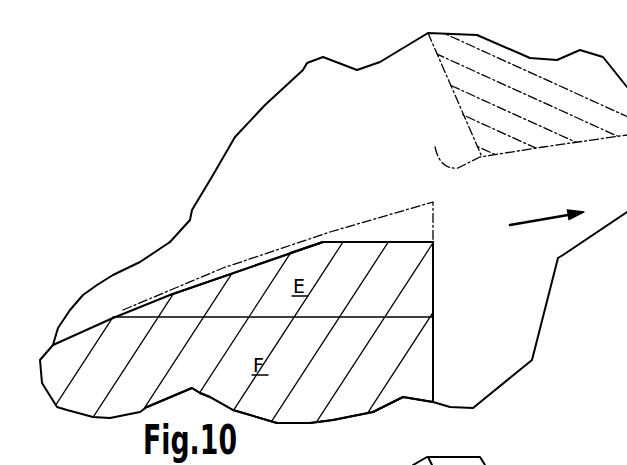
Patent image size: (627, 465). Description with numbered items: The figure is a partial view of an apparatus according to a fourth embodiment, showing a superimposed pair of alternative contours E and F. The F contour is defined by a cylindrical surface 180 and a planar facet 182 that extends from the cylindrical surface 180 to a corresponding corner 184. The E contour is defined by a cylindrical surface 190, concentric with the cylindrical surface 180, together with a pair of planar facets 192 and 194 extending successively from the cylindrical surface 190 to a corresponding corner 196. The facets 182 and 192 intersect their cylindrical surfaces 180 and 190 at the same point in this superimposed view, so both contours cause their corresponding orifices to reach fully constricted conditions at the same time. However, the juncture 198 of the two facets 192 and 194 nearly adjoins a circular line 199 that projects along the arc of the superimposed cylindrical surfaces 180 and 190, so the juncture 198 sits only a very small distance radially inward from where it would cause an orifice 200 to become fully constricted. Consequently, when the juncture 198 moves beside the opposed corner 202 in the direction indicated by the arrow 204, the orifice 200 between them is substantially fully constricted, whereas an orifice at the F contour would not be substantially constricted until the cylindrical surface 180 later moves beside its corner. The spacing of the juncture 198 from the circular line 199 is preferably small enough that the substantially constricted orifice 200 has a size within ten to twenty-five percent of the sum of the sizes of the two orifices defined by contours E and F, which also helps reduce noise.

The cylindrical surface 180 is at (82, 330).
The planar facet 182 is at (388, 317).
The corner 184 is at (433, 316).
The cylindrical surface 190 is at (100, 322).
The planar facet 192 is at (261, 263).
The planar facet 194 is at (390, 242).
The corner 196 is at (433, 242).
The juncture 198 is at (323, 242).
The circular line 199 is at (361, 218).
The orifice 200 is at (362, 134).
The opposed corner 202 is at (510, 118).
The arrow 204 is at (534, 224).